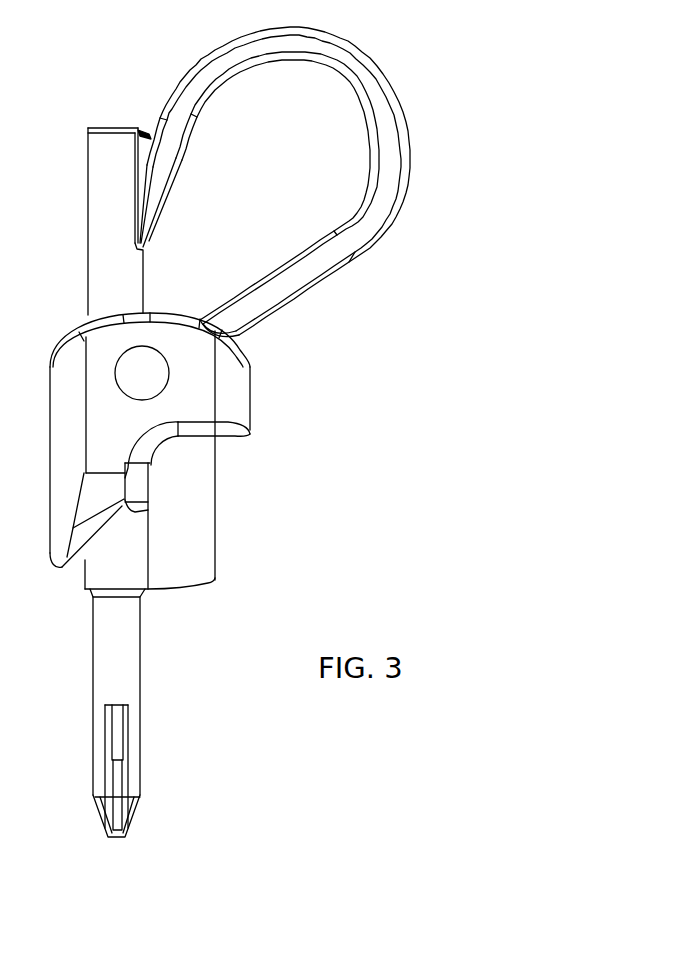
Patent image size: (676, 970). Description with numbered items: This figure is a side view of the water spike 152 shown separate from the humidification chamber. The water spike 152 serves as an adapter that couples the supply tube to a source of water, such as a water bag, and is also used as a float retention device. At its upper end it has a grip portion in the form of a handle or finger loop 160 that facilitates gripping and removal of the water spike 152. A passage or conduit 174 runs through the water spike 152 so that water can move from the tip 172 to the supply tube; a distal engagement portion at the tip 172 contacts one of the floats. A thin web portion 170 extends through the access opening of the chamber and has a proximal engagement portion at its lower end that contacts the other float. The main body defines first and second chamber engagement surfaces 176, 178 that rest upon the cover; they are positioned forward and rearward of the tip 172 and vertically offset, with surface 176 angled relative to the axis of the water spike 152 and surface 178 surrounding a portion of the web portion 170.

The water spike 152 is at (493, 114).
The finger loop 160 is at (351, 52).
The web portion 170 is at (204, 537).
The tip 172 is at (135, 812).
The conduit 174 is at (118, 777).
The first chamber engagement surface 176 is at (73, 566).
The second chamber engagement surface 178 is at (234, 438).